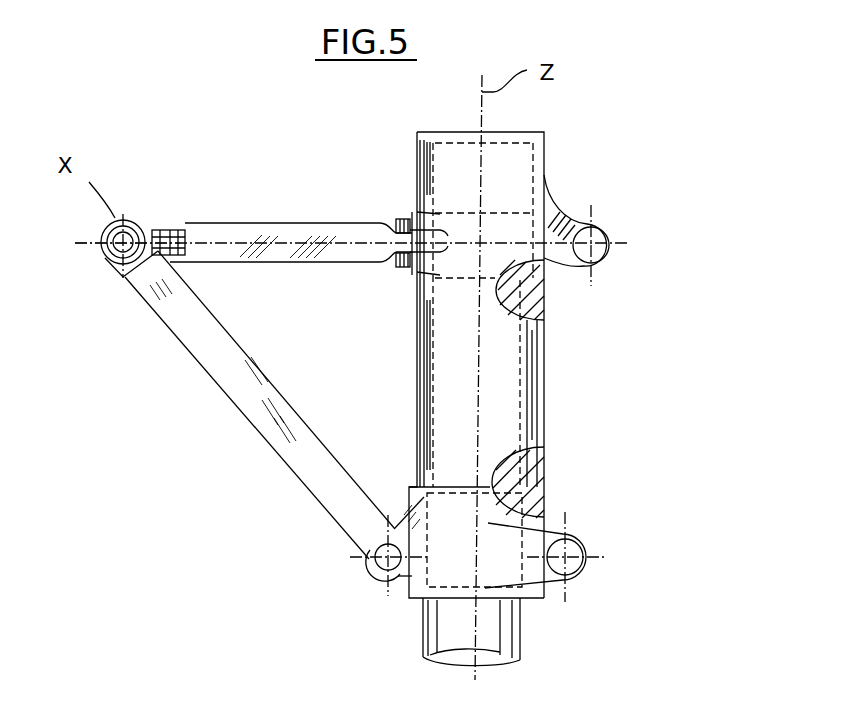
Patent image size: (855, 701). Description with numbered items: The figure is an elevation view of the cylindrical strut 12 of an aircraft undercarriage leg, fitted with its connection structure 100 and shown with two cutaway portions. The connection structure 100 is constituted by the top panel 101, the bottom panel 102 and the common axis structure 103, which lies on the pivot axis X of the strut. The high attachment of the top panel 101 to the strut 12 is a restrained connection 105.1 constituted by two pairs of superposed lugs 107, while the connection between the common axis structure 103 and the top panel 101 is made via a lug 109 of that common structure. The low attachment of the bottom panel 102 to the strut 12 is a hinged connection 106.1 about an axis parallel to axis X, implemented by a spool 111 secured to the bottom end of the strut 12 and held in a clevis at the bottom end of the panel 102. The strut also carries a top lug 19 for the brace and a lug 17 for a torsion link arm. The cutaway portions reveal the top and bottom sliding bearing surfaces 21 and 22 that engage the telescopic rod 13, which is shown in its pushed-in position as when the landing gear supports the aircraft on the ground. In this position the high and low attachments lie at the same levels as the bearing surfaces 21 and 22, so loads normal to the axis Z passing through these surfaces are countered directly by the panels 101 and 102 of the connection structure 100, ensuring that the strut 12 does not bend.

The cylindrical strut 12 is at (507, 397).
The telescopic rod 13 is at (445, 623).
The lug 17 is at (573, 578).
The top lug 19 is at (610, 223).
The top sliding bearing surface 21 is at (547, 273).
The bottom sliding bearing surface 22 is at (545, 508).
The connection structure 100 is at (178, 375).
The top panel 101 is at (295, 230).
The bottom panel 102 is at (272, 422).
The common axis structure 103 is at (133, 220).
The restrained connection 105.1 is at (392, 277).
The hinged connection 106.1 is at (355, 568).
The superposed lugs 107 is at (405, 217).
The lug 109 is at (177, 220).
The spool 111 is at (398, 604).